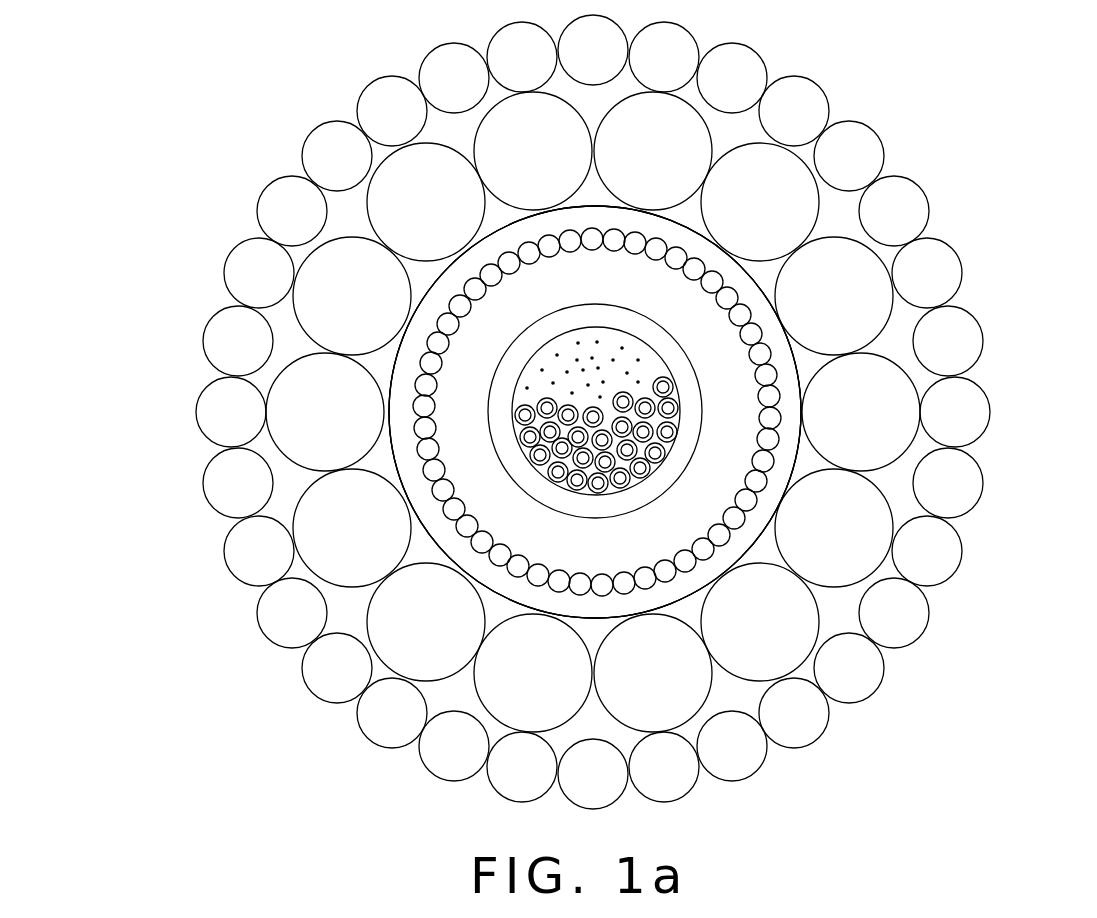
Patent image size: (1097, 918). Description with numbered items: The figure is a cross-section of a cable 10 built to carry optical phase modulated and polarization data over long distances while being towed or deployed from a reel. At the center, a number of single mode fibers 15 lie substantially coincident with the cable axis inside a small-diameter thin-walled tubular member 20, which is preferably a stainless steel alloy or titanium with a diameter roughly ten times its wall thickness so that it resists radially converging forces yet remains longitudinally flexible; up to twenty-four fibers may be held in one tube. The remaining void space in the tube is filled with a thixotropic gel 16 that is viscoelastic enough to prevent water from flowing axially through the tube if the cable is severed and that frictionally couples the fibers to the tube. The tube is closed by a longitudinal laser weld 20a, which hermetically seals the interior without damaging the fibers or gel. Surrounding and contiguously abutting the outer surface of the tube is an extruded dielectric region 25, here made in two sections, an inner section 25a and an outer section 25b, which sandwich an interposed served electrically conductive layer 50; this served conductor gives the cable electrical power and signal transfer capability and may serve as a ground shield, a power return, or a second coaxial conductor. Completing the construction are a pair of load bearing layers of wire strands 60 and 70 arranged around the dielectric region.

The cable 10 is at (250, 125).
The single mode fibers 15 is at (520, 447).
The thixotropic gel 16 is at (548, 348).
The thin-walled tubular member 20 is at (617, 305).
The laser weld 20a is at (678, 387).
The extruded dielectric region 25 is at (722, 490).
The inner section 25a is at (708, 527).
The outer section 25b is at (708, 572).
The served electrically conductive layer 50 is at (572, 243).
The load bearing layer of wire strands 60 is at (795, 173).
The load bearing layer of wire strands 70 is at (752, 68).